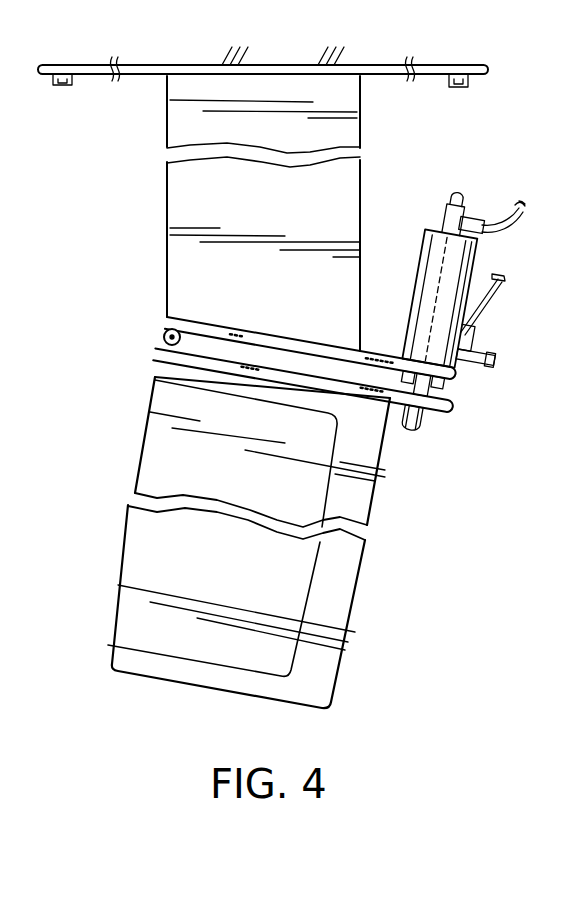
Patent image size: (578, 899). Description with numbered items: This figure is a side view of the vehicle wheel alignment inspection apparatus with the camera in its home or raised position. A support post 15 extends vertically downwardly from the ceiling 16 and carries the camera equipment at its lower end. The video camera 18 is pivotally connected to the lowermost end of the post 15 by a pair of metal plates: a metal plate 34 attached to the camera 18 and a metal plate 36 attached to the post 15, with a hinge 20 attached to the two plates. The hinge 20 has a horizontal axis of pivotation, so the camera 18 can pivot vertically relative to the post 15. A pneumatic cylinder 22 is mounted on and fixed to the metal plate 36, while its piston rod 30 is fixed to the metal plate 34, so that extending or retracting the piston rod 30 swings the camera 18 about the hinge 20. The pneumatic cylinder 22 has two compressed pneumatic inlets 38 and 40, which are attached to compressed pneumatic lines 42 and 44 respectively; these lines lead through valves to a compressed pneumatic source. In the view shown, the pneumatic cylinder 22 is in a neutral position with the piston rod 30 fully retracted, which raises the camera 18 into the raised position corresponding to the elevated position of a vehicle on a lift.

The post 15 is at (185, 209).
The ceiling 16 is at (140, 75).
The video camera 18 is at (347, 586).
The hinge 20 is at (163, 335).
The pneumatic cylinder 22 is at (432, 248).
The piston rod 30 is at (422, 432).
The metal plate 34 is at (453, 408).
The metal plate 36 is at (458, 376).
The compressed pneumatic inlet 38 is at (474, 218).
The compressed pneumatic inlet 40 is at (484, 347).
The compressed pneumatic line 42 is at (513, 228).
The compressed pneumatic line 44 is at (506, 292).